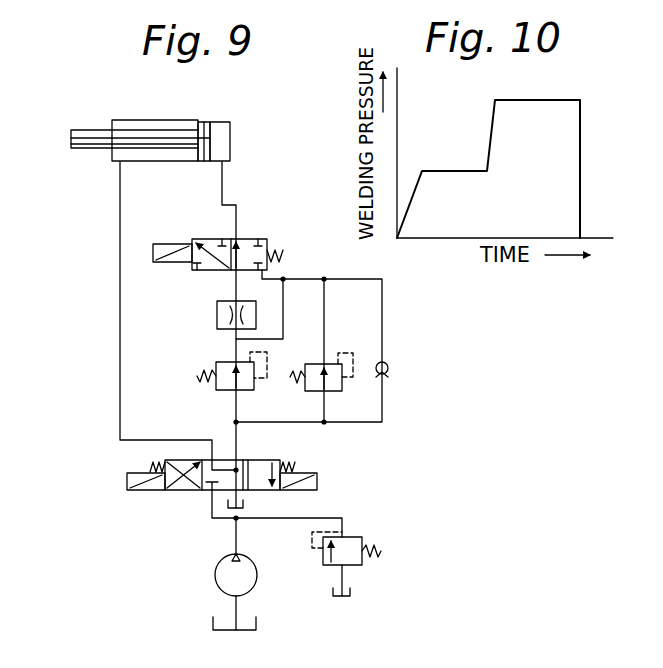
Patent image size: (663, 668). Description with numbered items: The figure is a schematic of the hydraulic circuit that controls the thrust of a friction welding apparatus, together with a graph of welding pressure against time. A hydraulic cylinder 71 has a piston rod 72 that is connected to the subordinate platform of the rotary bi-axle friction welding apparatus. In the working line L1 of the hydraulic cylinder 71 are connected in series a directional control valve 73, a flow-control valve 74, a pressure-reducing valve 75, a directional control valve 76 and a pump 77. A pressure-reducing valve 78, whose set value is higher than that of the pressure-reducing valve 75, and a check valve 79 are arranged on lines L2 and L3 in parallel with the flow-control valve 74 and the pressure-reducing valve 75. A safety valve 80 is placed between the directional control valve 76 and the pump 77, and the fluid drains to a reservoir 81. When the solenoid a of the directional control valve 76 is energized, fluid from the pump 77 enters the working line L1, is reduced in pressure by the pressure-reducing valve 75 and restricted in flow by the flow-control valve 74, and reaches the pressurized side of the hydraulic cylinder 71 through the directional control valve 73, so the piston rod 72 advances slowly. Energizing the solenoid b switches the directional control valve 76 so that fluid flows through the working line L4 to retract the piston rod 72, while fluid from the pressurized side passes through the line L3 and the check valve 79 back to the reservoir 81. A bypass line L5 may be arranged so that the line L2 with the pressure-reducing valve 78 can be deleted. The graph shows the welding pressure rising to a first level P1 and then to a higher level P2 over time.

In FIG. 9, the hydraulic cylinder 71 is at (157, 120).
In FIG. 9, the piston rod 72 is at (86, 149).
In FIG. 9, the directional control valve 73 is at (198, 239).
In FIG. 9, the flow-control valve 74 is at (217, 318).
In FIG. 9, the pressure-reducing valve 75 is at (215, 389).
In FIG. 9, the directional control valve 76 is at (183, 492).
In FIG. 9, the pump 77 is at (214, 578).
In FIG. 9, the pressure-reducing valve 78 is at (342, 389).
In FIG. 9, the check valve 79 is at (389, 368).
In FIG. 9, the safety valve 80 is at (352, 566).
In FIG. 9, the reservoir 81 is at (244, 507).
In FIG. 9, the working line L1 is at (222, 180).
In FIG. 9, the line L2 is at (324, 306).
In FIG. 9, the line L3 is at (382, 312).
In FIG. 9, the working line L4 is at (119, 343).
In FIG. 9, the bypass line L5 is at (304, 316).
In FIG. 9, the solenoid a is at (127, 481).
In FIG. 9, the solenoid b is at (317, 482).
In FIG. 10, the first welding pressure P1 is at (505, 177).
In FIG. 10, the second welding pressure P2 is at (595, 92).